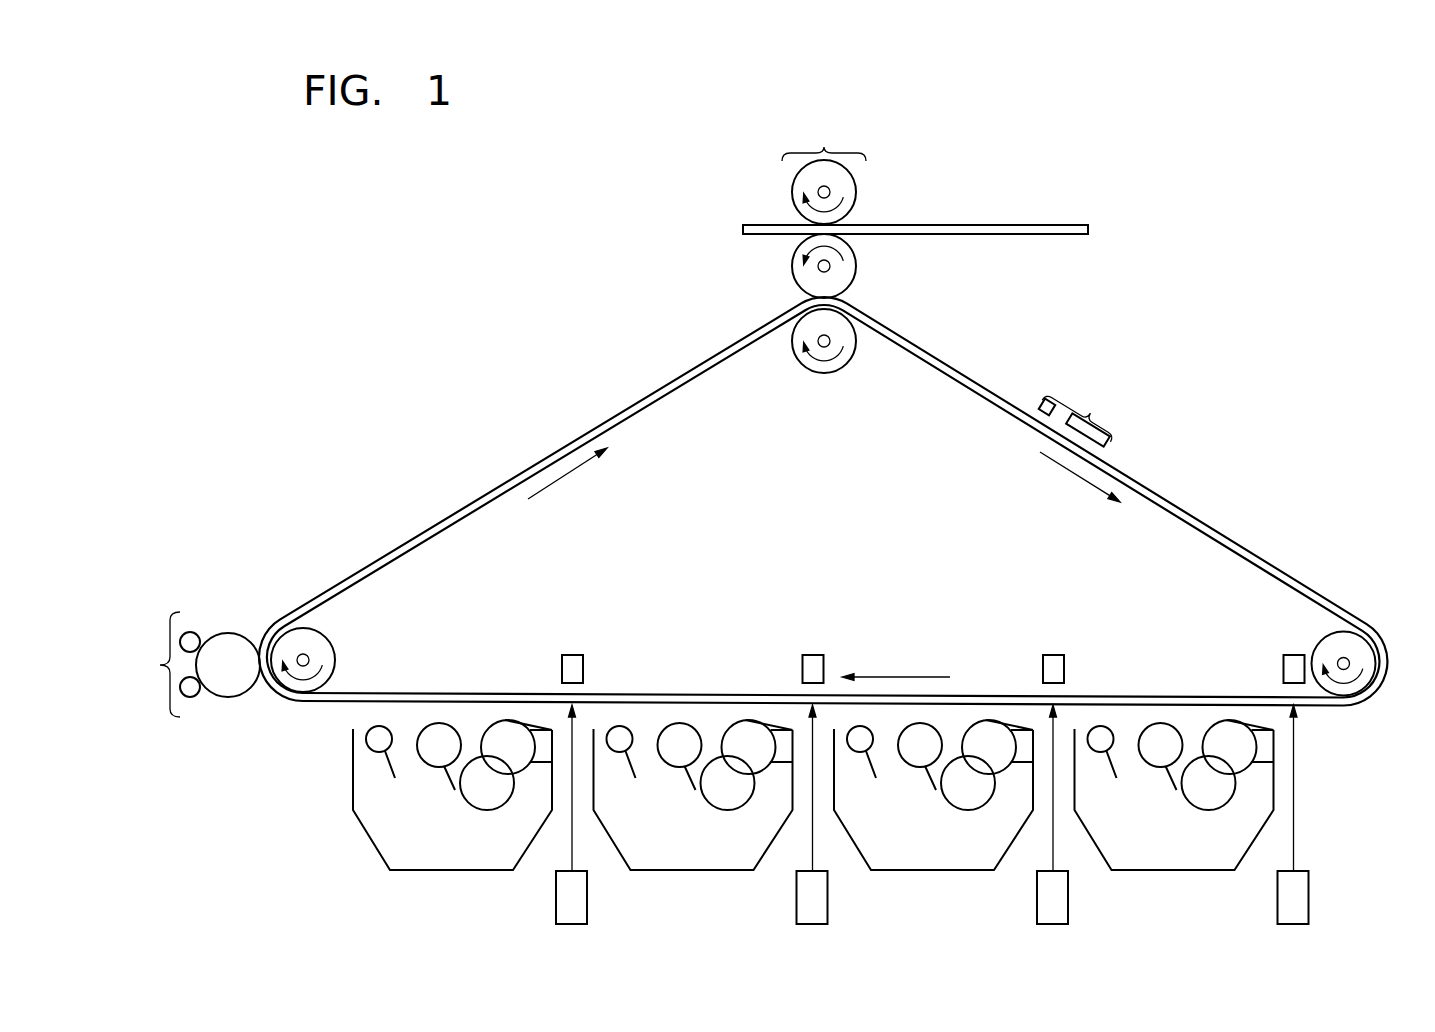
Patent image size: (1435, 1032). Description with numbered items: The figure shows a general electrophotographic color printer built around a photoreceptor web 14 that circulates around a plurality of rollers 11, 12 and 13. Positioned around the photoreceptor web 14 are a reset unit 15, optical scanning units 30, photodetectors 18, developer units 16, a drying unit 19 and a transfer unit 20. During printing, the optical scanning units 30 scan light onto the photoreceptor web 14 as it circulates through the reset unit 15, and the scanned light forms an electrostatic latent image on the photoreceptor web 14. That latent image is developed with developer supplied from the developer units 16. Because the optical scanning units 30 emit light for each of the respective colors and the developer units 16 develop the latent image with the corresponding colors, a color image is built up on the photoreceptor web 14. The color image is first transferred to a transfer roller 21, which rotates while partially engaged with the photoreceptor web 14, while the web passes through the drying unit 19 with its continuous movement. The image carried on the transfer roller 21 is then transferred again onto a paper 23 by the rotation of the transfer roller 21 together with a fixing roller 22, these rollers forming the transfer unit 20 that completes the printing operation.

The roller 11 is at (303, 688).
The roller 12 is at (845, 337).
The roller 13 is at (1355, 645).
The photoreceptor web 14 is at (1183, 518).
The reset unit 15 is at (1078, 410).
The developer unit 16 is at (451, 870).
The photodetector 18 is at (573, 654).
The drying unit 19 is at (193, 664).
The transfer unit 20 is at (824, 141).
The transfer roller 21 is at (795, 265).
The fixing roller 22 is at (848, 190).
The paper 23 is at (1028, 230).
The optical scanning unit 30 is at (587, 914).